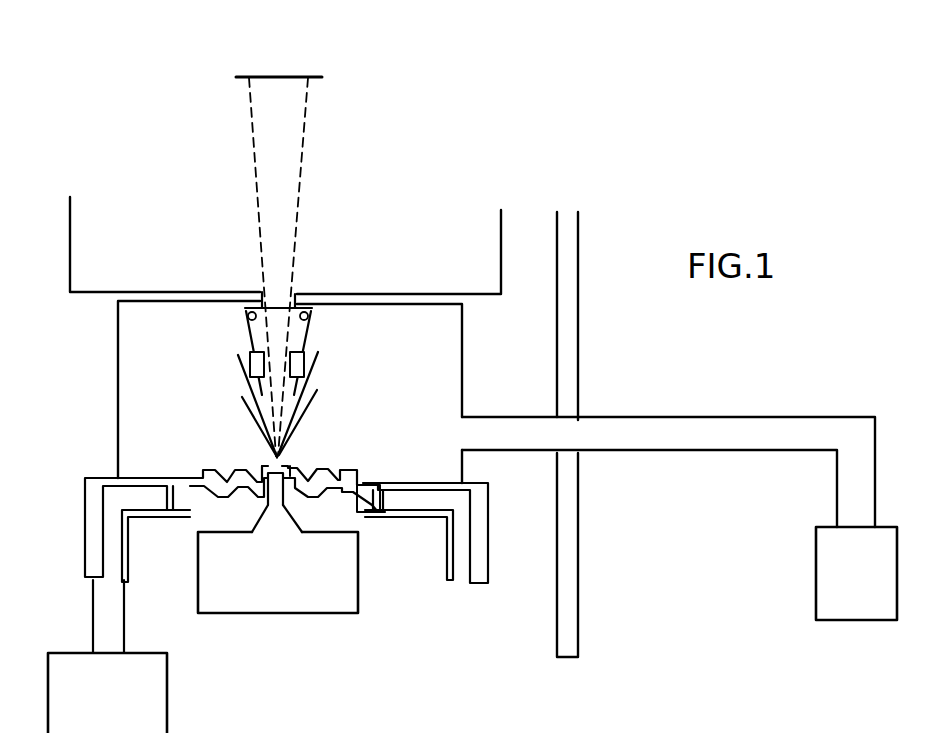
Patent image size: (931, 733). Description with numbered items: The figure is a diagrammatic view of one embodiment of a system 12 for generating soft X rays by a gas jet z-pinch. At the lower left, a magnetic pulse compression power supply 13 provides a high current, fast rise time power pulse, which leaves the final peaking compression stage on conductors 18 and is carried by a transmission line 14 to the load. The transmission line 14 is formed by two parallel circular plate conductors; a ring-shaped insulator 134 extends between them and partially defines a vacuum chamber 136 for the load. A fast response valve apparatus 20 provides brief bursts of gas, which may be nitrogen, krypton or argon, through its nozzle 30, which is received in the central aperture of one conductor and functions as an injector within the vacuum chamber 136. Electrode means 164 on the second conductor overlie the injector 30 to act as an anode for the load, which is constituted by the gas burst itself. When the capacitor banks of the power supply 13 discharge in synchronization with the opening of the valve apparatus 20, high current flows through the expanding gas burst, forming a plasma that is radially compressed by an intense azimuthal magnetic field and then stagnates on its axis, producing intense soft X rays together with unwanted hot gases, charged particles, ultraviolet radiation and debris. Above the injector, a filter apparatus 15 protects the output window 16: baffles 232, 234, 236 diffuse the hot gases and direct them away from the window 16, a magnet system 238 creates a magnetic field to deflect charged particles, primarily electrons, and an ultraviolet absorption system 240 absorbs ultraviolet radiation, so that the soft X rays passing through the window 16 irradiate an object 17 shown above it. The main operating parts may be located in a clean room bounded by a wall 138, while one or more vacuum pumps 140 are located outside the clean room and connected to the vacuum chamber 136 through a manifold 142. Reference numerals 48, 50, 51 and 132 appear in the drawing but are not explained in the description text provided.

The system for generating soft X rays 12 is at (468, 392).
The magnetic pulse compression power supply 13 is at (107, 693).
The transmission line 14 is at (413, 478).
The filter apparatus 15 is at (240, 371).
The window 16 is at (282, 294).
The object 17 is at (288, 76).
The conductors 18 is at (93, 607).
The fast response valve apparatus 20 is at (260, 615).
The nozzle (injector) 30 is at (258, 522).
The first electrode 48 is at (177, 480).
The central electrode rod 50 is at (340, 497).
The electrode tips 51 is at (268, 472).
The interaction region 132 is at (303, 437).
The ring-shaped insulator 134 is at (100, 498).
The vacuum chamber 136 is at (117, 383).
The wall 138 is at (572, 370).
The vacuum pump 140 is at (816, 585).
The manifold 142 is at (640, 417).
The electrode means 164 is at (317, 726).
The baffle 232 is at (242, 398).
The baffle 234 is at (308, 378).
The baffle 236 is at (308, 325).
The magnet system 238 is at (248, 355).
The ultraviolet absorption system 240 is at (245, 308).